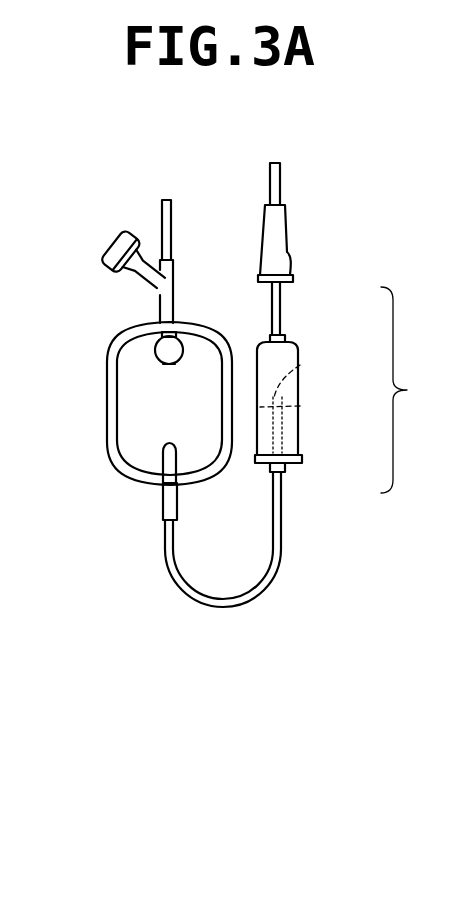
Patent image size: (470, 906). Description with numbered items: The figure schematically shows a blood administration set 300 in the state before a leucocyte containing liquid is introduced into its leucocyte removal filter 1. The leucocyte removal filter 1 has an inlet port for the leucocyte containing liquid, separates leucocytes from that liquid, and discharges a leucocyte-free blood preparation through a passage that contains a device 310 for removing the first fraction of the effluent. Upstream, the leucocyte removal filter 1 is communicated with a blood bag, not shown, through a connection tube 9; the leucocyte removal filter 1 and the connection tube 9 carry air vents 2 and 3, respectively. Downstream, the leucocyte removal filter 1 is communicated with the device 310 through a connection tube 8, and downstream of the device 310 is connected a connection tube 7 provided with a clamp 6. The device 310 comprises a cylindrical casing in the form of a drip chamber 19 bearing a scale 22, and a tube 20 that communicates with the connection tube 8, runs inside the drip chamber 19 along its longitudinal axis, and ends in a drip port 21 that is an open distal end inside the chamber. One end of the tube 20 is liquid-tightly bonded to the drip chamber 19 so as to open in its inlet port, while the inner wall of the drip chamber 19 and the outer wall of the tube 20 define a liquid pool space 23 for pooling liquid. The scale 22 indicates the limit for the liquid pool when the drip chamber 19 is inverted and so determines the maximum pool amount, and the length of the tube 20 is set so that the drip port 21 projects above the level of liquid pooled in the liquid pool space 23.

The leucocyte removal filter 1 is at (112, 426).
The air vent 2 is at (155, 351).
The air vent 3 is at (113, 245).
The clamp 6 is at (281, 235).
The connection tube 7 is at (272, 305).
The connection tube 8 is at (278, 568).
The connection tube 9 is at (172, 223).
The drip chamber 19 is at (292, 348).
The tube 20 is at (302, 447).
The drip port 21 is at (300, 365).
The scale 22 is at (300, 406).
The liquid pool space 23 is at (290, 430).
The blood administration set 300 is at (207, 640).
The device for removing the first fraction 310 is at (420, 390).